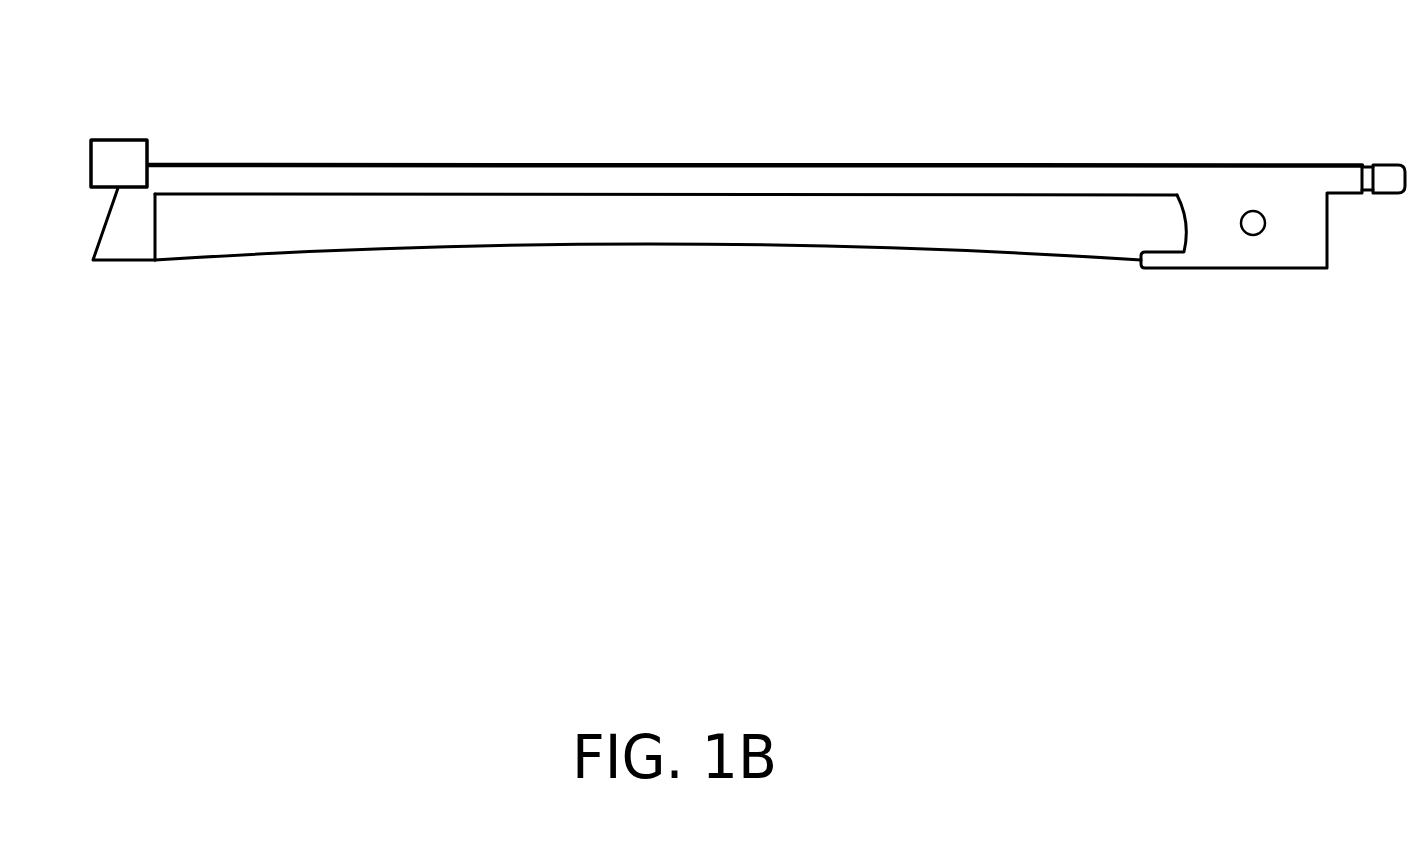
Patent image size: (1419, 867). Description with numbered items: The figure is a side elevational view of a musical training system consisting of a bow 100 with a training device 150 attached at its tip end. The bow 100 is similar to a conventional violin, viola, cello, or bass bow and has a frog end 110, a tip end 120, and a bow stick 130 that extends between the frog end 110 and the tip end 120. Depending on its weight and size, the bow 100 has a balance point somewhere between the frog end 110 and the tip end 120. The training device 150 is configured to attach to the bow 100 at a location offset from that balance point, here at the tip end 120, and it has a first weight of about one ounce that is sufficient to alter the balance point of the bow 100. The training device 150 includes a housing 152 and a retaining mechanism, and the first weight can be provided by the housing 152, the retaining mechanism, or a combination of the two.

The bow 100 is at (735, 222).
The frog end 110 is at (1290, 332).
The tip end 120 is at (132, 305).
The bow stick 130 is at (514, 177).
The training device 150 is at (74, 112).
The housing 152 is at (124, 150).